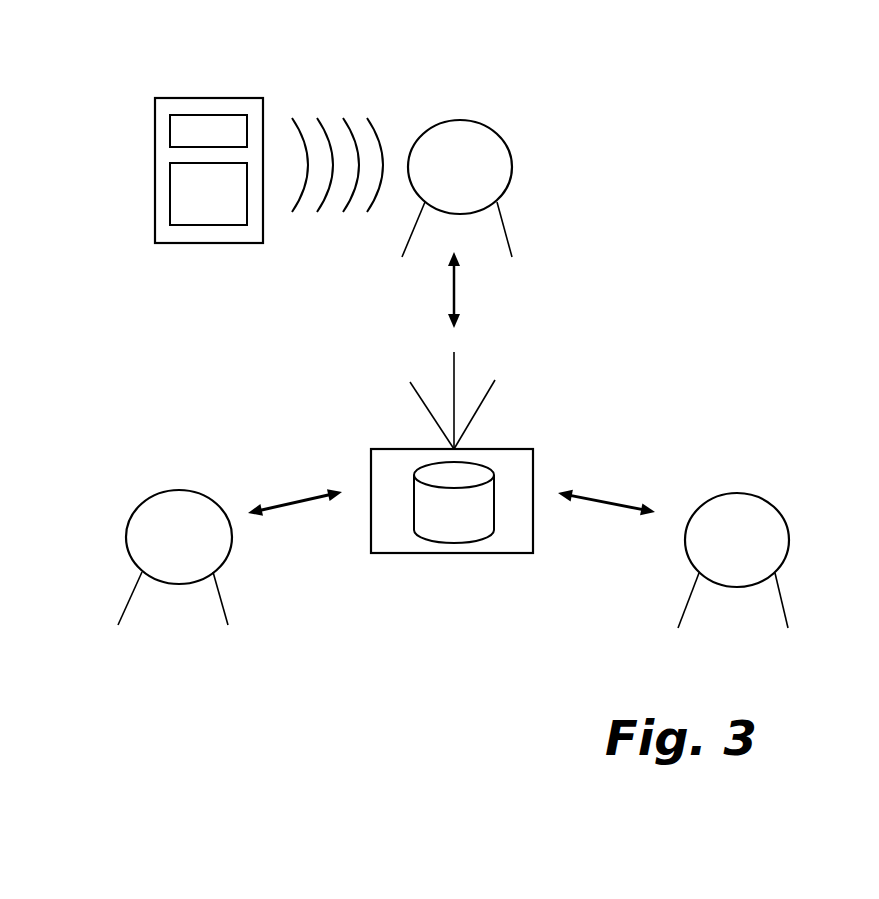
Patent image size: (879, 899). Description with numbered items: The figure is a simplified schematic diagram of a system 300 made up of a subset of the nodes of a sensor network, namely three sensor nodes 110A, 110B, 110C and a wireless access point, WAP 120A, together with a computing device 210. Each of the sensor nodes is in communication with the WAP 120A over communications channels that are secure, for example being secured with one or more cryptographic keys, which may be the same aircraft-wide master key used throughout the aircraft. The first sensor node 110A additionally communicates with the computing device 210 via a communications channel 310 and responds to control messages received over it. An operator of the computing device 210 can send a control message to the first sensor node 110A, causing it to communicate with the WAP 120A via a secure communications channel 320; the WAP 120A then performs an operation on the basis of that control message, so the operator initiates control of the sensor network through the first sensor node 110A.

The system 300 is at (106, 80).
The computing device 210 is at (210, 97).
The communications channel 310 is at (332, 100).
The first sensor node 110A is at (462, 120).
The secure communications channel 320 is at (480, 299).
The WAP 120A is at (535, 448).
The sensor node 110C is at (183, 490).
The sensor node 110B is at (745, 490).